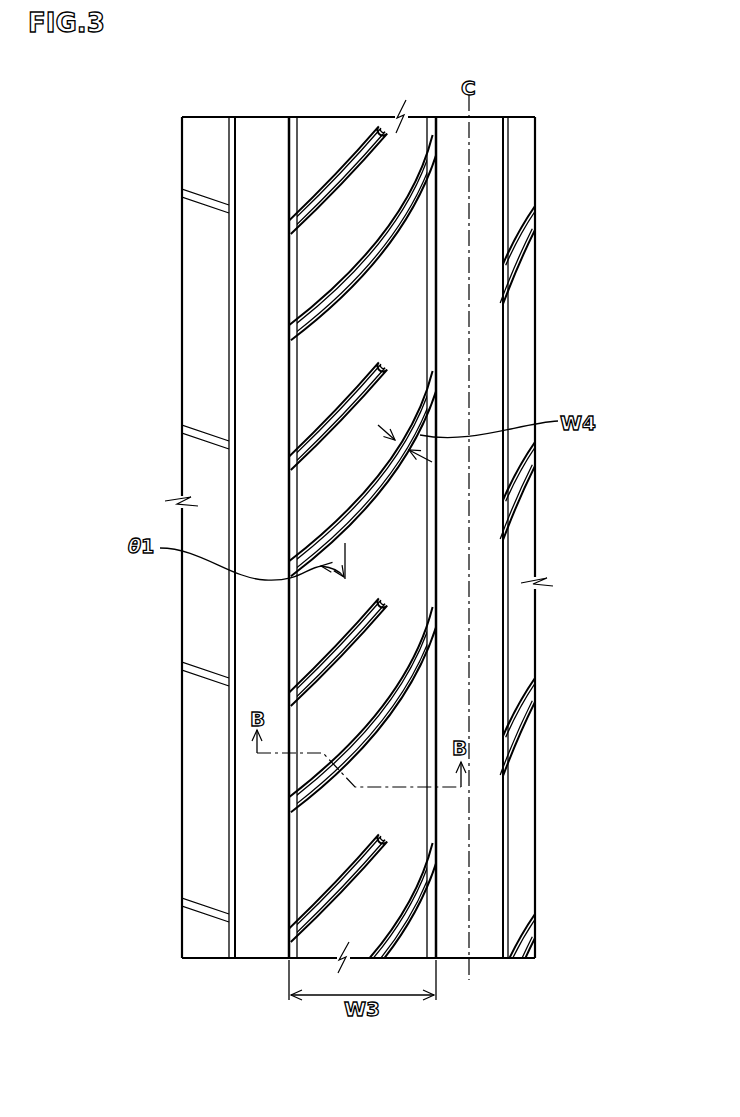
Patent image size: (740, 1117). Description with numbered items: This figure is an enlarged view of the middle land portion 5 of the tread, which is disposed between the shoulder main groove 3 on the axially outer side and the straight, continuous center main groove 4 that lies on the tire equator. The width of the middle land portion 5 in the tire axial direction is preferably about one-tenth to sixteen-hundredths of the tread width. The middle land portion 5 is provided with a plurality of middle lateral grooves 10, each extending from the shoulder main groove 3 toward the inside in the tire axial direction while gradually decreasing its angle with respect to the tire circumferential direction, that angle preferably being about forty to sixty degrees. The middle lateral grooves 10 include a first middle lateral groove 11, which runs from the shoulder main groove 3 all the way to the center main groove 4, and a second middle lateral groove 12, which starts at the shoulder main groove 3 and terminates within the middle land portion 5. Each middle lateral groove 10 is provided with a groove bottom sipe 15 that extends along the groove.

The shoulder main groove 3 is at (263, 170).
The center main groove 4 is at (478, 168).
The middle land portion 5 is at (370, 208).
The middle lateral groove 10 is at (352, 272).
The first middle lateral groove 11 is at (385, 494).
The second middle lateral groove 12 is at (322, 657).
The groove bottom sipe 15 is at (328, 418).